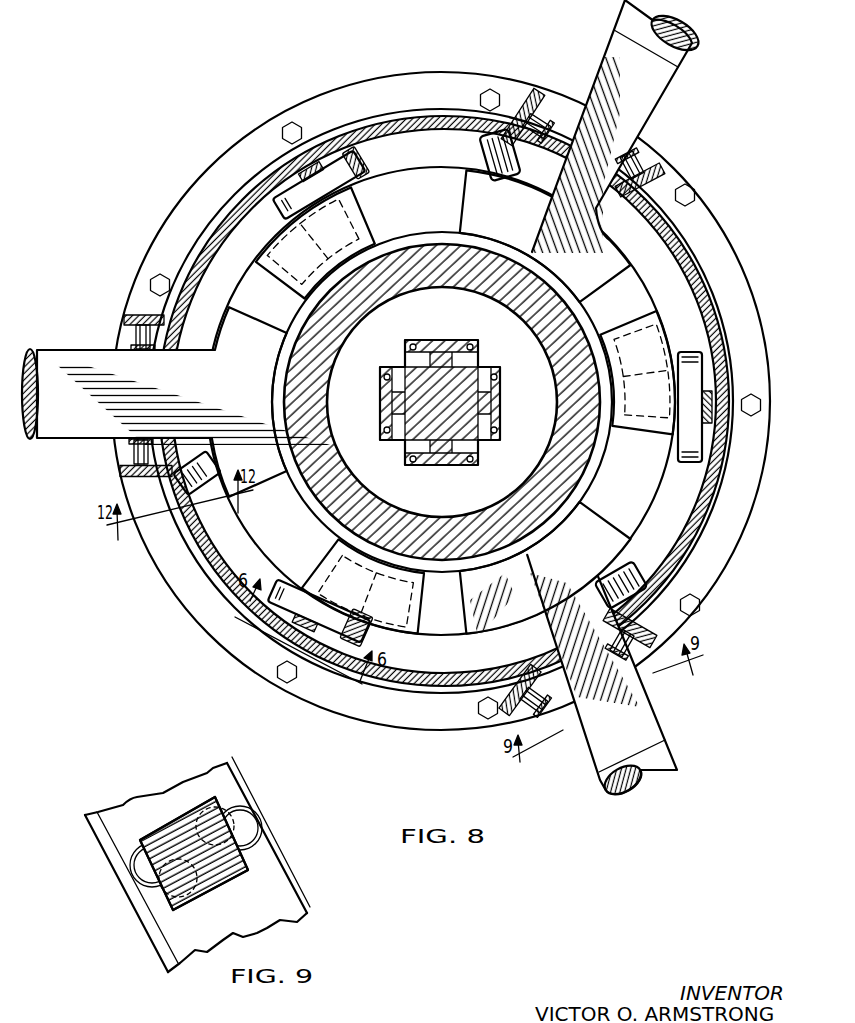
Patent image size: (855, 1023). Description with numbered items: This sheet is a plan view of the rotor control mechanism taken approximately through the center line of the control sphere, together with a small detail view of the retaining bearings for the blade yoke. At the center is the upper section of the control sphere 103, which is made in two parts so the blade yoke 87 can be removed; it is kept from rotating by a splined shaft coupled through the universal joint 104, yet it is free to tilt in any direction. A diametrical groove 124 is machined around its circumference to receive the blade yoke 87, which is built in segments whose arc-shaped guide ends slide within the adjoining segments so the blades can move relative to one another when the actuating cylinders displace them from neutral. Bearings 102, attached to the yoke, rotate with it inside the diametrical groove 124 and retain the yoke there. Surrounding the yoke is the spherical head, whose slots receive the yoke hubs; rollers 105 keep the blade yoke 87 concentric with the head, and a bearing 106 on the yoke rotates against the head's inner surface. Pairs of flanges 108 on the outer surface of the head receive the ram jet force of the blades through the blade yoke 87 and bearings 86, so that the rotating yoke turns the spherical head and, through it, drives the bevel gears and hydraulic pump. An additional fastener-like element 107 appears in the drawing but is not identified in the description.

In FIG. 8, the bearings 86 is at (543, 101).
In FIG. 9, the bearings 86 is at (262, 847).
In FIG. 8, the blade yoke 87 is at (676, 66).
In FIG. 9, the blade yoke 87 is at (200, 864).
In FIG. 8, the bearings 102 is at (360, 173).
In FIG. 8, the upper section of control sphere 103 is at (473, 513).
In FIG. 8, the universal joint 104 is at (480, 364).
In FIG. 8, the rollers 105 is at (466, 108).
In FIG. 8, the bearing 106 is at (182, 506).
In FIG. 8, the hex nut 107 is at (481, 704).
In FIG. 8, the flanges 108 is at (518, 96).
In FIG. 9, the flanges 108 is at (260, 818).
In FIG. 8, the diametrical groove 124 is at (278, 423).